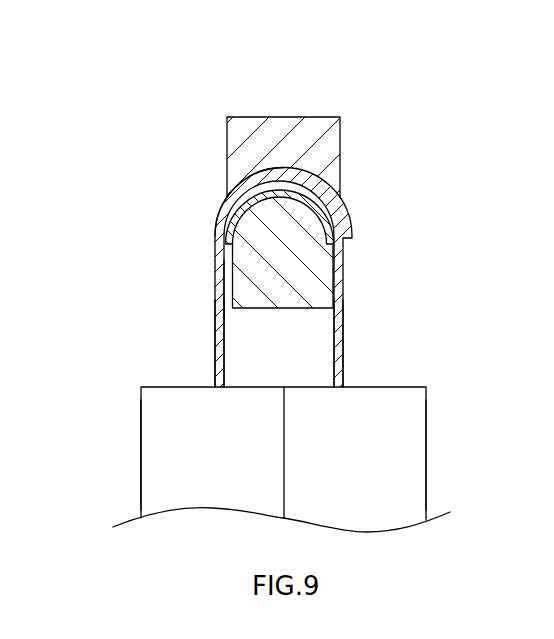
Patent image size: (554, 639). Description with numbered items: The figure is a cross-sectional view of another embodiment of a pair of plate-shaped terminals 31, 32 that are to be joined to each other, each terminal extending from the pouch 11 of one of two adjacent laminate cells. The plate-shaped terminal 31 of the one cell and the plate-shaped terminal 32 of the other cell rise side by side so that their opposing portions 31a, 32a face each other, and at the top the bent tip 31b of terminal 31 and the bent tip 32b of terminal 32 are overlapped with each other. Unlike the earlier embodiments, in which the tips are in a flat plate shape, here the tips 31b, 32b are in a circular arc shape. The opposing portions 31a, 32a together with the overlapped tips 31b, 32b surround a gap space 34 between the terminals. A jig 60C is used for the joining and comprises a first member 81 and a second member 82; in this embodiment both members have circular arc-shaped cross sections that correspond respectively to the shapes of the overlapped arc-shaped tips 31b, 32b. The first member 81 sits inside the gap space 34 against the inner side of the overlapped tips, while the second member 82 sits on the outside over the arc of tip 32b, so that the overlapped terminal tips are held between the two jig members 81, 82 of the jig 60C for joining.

The jig 60C is at (230, 98).
The second member 82 is at (310, 117).
The first member 81 is at (300, 308).
The plate-shaped terminal 31 is at (213, 328).
The opposing portion 31a is at (214, 345).
The bent tip 31b is at (346, 219).
The plate-shaped terminal 32 is at (345, 276).
The opposing portion 32a is at (345, 340).
The bent tip 32b is at (226, 222).
The gap space 34 is at (223, 290).
The pouch 11 is at (139, 470).